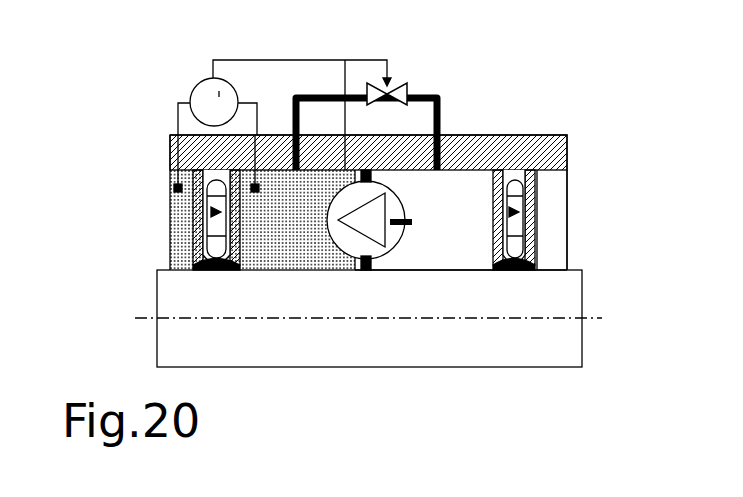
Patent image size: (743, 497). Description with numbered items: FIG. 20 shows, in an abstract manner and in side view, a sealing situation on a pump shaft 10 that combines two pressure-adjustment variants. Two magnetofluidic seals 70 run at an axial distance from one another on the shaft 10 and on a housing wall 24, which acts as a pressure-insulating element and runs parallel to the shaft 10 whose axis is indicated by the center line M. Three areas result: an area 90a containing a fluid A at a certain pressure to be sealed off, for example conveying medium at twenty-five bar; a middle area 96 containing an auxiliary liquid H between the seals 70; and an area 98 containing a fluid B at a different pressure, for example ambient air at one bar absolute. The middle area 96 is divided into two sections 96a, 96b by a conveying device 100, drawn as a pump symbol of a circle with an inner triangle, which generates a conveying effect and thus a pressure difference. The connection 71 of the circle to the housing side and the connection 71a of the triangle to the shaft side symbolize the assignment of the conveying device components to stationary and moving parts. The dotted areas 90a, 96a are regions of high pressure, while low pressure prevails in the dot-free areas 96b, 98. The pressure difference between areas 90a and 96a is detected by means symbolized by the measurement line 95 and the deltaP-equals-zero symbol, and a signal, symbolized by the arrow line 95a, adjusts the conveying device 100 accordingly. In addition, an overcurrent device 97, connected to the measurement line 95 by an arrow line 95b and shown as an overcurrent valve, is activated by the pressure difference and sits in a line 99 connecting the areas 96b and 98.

The shaft 10 is at (618, 356).
The housing wall 24 is at (578, 136).
The magnetofluidic seals 70 is at (180, 258).
The connection of the circle to the housing side 71 is at (370, 264).
The connection of the triangle to the shaft side 71a is at (372, 177).
The area with fluid A 90a is at (180, 207).
The measurement line 95 is at (178, 115).
The arrow line (signal) 95a is at (257, 60).
The arrow line to overcurrent device 95b is at (367, 60).
The area with auxiliary liquid H 96 is at (507, 130).
The first section of middle area 96a is at (290, 243).
The second section of middle area 96b is at (477, 253).
The overcurrent device 97 is at (407, 88).
The area with fluid B 98 is at (553, 195).
The line 99 is at (442, 113).
The conveying device 100 is at (410, 224).
The fluid A is at (180, 221).
The fluid B is at (555, 207).
The auxiliary liquid H is at (433, 256).
The center axis M is at (603, 317).